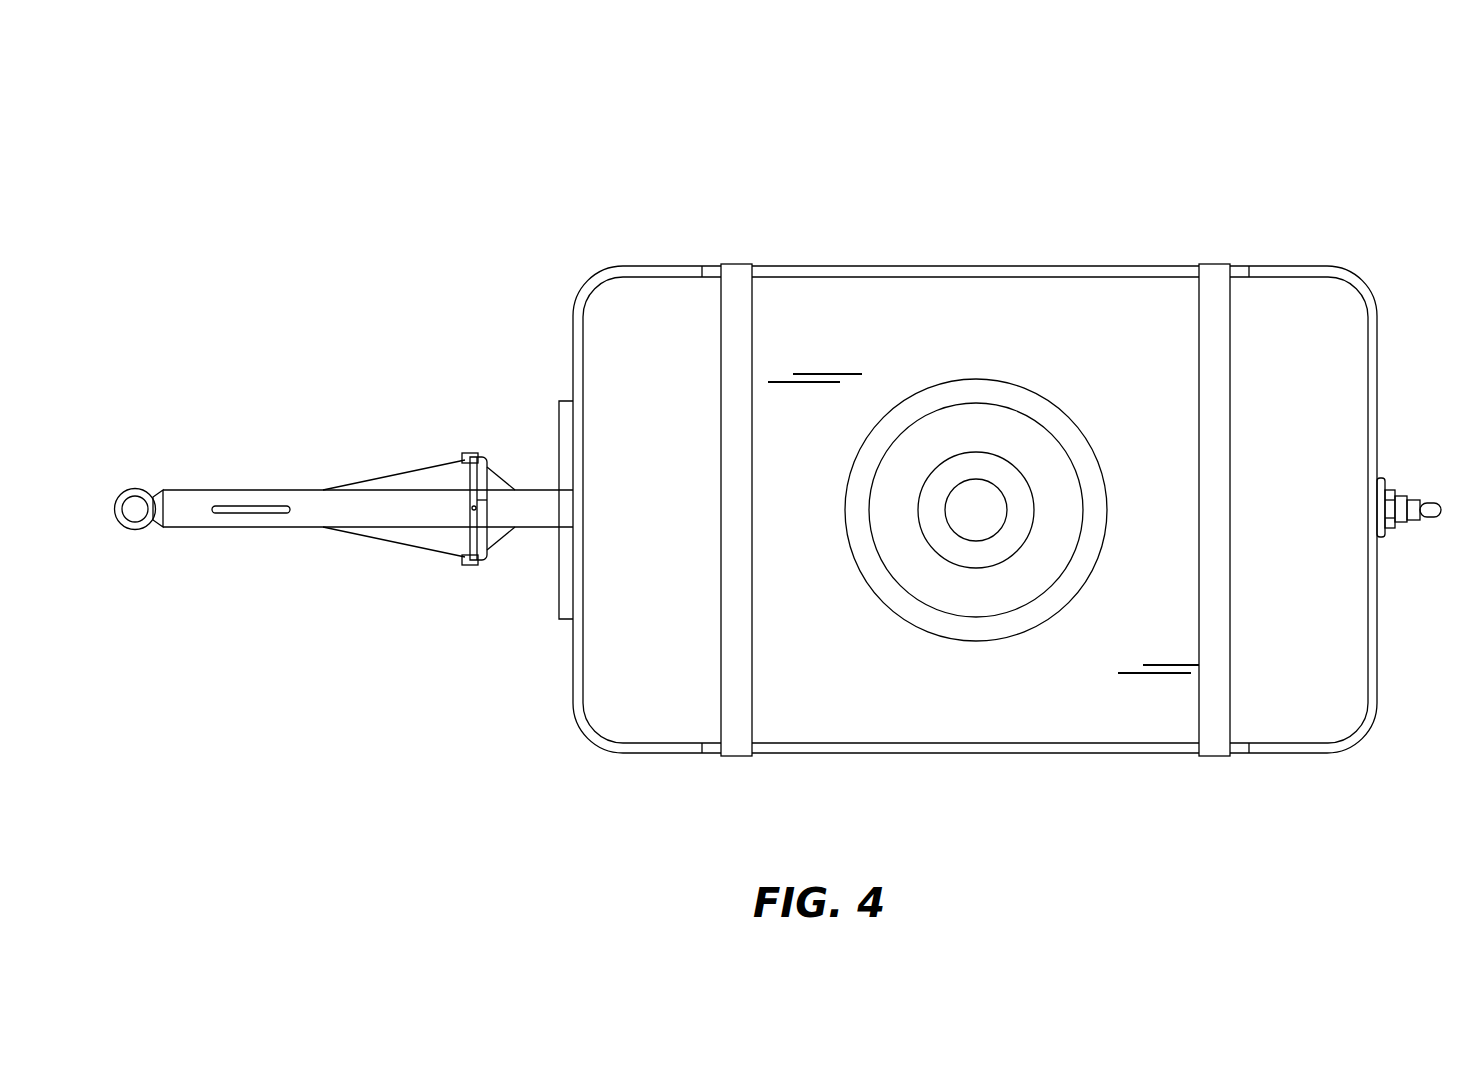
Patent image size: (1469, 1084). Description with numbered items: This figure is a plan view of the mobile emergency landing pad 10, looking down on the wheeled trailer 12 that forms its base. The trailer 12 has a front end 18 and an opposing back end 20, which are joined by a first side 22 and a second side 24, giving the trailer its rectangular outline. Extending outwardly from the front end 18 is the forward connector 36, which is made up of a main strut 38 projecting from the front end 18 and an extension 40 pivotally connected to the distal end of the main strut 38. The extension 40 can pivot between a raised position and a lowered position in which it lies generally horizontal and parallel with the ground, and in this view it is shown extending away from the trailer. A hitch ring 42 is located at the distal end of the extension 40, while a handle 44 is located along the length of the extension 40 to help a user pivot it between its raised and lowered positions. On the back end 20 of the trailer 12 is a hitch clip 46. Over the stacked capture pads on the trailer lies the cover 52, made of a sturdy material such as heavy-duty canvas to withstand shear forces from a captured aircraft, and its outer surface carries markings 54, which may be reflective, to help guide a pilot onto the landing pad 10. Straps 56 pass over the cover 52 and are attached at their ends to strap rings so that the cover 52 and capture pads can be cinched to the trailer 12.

The mobile emergency landing pad 10 is at (1088, 145).
The wheeled trailer 12 is at (957, 255).
The front end 18 is at (573, 660).
The back end 20 is at (1377, 640).
The first side 22 is at (1068, 753).
The second side 24 is at (873, 268).
The forward connector 36 is at (338, 507).
The main strut 38 is at (535, 502).
The extension 40 is at (217, 490).
The hitch ring 42 is at (133, 489).
The handle 44 is at (243, 512).
The hitch clip 46 is at (1427, 505).
The cover 52 is at (1333, 338).
The markings 54 is at (968, 600).
The straps 56 is at (733, 272).